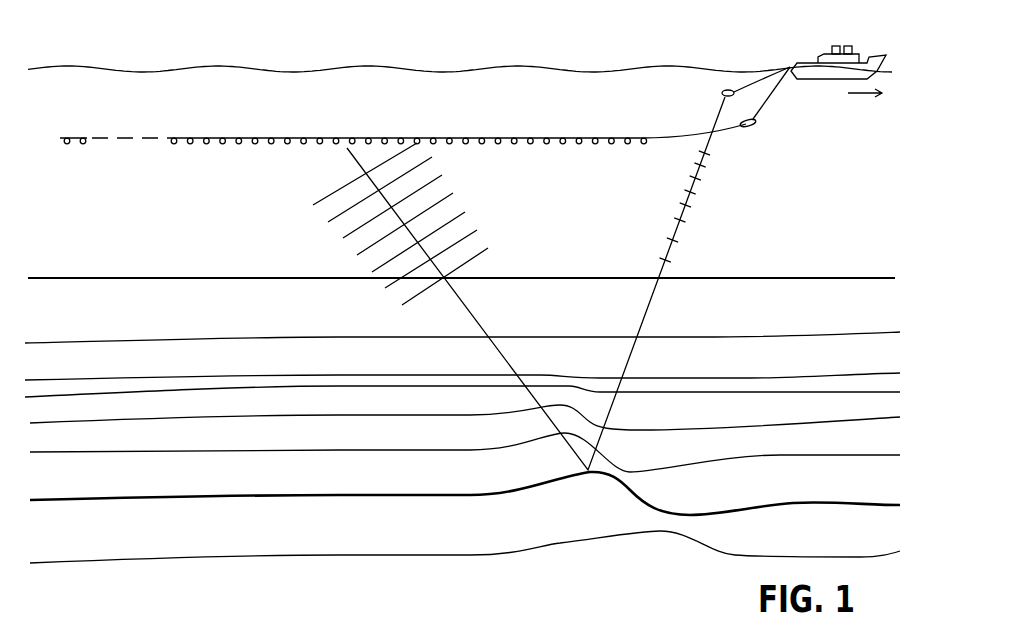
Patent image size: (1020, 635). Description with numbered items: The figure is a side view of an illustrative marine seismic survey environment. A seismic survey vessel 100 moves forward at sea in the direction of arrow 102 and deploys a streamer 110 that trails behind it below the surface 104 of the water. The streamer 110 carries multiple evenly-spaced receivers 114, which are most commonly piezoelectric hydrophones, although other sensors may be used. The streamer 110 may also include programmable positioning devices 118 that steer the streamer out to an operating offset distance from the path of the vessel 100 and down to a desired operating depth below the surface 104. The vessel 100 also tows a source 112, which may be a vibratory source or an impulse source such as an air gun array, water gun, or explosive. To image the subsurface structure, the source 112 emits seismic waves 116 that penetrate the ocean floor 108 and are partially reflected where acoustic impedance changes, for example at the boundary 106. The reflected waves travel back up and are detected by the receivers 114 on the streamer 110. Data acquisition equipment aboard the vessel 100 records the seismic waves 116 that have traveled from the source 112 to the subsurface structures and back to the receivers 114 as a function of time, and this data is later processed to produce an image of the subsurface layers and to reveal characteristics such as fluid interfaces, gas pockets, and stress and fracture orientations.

The seismic survey vessel 100 is at (817, 58).
The arrow 102 is at (865, 106).
The surface 104 is at (500, 72).
The boundary 106 is at (622, 485).
The ocean floor 108 is at (818, 254).
The streamer 110 is at (767, 105).
The source 112 is at (722, 93).
The receivers 114 is at (206, 144).
The seismic waves 116 is at (678, 223).
The programmable positioning devices 118 is at (755, 128).